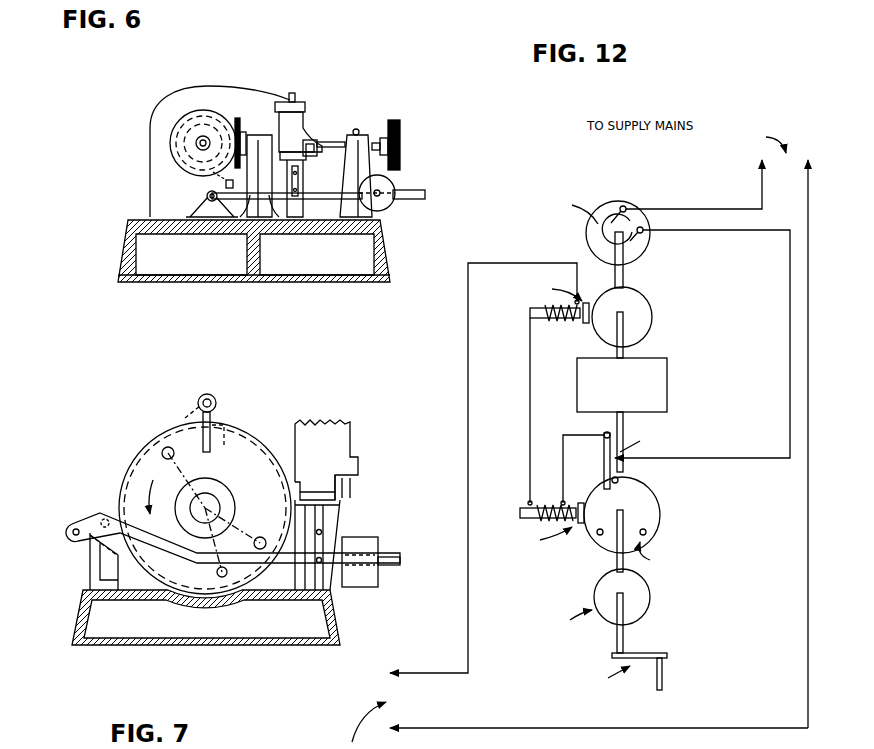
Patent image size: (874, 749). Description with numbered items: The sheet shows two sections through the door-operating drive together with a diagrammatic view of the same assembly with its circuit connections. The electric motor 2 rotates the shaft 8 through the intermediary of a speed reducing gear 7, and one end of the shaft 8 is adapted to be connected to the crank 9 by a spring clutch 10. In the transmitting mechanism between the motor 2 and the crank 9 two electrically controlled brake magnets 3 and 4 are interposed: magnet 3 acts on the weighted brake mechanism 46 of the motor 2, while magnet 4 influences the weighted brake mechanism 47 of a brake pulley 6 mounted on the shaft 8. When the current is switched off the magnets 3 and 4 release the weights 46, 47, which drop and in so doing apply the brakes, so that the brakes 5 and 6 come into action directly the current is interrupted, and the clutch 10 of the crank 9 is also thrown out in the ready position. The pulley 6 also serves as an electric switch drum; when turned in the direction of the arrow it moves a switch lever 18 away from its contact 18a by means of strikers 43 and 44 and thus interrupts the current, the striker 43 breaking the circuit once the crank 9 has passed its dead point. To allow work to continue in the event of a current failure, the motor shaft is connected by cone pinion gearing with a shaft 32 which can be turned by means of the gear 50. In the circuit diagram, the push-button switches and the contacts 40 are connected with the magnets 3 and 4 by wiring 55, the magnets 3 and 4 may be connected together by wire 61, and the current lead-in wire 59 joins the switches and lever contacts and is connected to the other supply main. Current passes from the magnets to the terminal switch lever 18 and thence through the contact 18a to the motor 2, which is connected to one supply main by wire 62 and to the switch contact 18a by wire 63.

In FIG. 12, the electric motor 2 is at (614, 213).
In FIG. 6, the brake magnet 3 is at (293, 127).
In FIG. 12, the brake magnet 3 is at (562, 330).
In FIG. 7, the brake magnet 4 is at (317, 433).
In FIG. 12, the brake magnet 4 is at (545, 500).
In FIG. 6, the brake 5 is at (200, 112).
In FIG. 12, the brake 5 is at (640, 315).
In FIG. 7, the brake pulley 6 is at (253, 447).
In FIG. 12, the brake pulley 6 is at (610, 538).
In FIG. 12, the speed reducing gear 7 is at (655, 373).
In FIG. 12, the shaft 8 is at (626, 334).
In FIG. 12, the crank 9 is at (665, 673).
In FIG. 12, the spring clutch 10 is at (640, 612).
In FIG. 7, the switch lever 18 is at (220, 433).
In FIG. 12, the switch lever 18 is at (604, 432).
In FIG. 12, the switch contact 18a is at (623, 463).
In FIG. 6, the shaft 32 is at (330, 142).
In FIG. 7, the contact 40 is at (254, 543).
In FIG. 7, the striker 43 is at (222, 578).
In FIG. 12, the striker 43 is at (625, 486).
In FIG. 7, the striker 44 is at (162, 453).
In FIG. 12, the striker 44 is at (648, 532).
In FIG. 6, the weighted brake mechanism 46 is at (390, 187).
In FIG. 7, the weighted brake mechanism 47 is at (360, 543).
In FIG. 6, the gear 50 is at (395, 133).
In FIG. 12, the wiring 55 is at (467, 426).
In FIG. 12, the current lead-in wire 59 is at (806, 208).
In FIG. 12, the wire 61 is at (523, 404).
In FIG. 12, the wire 62 is at (760, 188).
In FIG. 12, the wire 63 is at (787, 305).